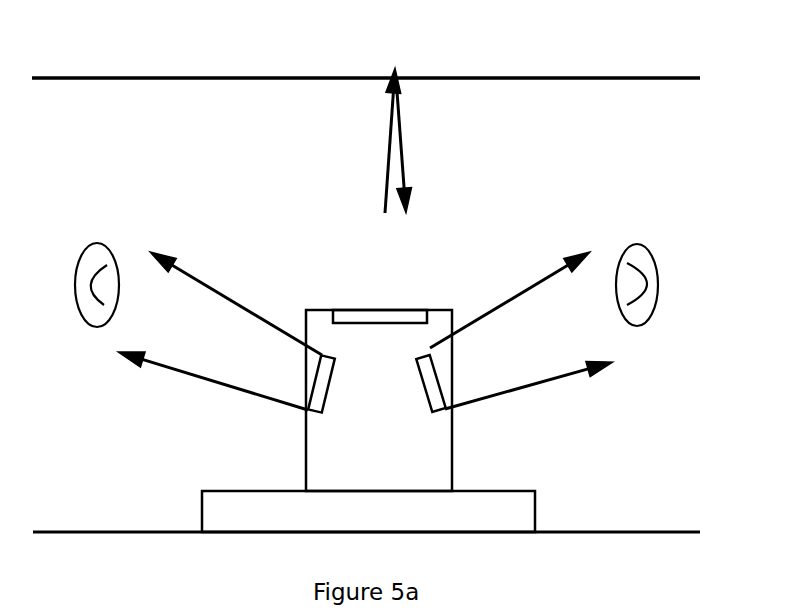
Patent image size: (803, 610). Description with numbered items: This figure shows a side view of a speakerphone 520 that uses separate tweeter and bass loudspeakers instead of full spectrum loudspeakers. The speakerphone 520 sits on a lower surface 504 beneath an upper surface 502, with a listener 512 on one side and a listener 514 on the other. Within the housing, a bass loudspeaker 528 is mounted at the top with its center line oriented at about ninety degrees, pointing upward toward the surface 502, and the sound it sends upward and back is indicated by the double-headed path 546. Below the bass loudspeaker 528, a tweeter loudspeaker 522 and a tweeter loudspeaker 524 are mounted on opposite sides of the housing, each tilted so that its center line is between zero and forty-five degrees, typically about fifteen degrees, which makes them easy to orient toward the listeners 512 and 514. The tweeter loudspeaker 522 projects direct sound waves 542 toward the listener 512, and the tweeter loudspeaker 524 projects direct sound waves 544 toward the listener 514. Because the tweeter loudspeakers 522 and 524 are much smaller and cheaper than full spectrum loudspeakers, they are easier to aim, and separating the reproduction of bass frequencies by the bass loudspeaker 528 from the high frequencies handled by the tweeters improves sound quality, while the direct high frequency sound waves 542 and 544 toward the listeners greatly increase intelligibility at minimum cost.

The ceiling / upper surface 502 is at (76, 78).
The floor / lower surface 504 is at (58, 530).
The listener 512 is at (117, 257).
The listener 514 is at (657, 273).
The speakerphone 520 is at (535, 490).
The tweeter loudspeaker 522 is at (312, 410).
The tweeter loudspeaker 524 is at (435, 413).
The bass loudspeaker 528 is at (385, 305).
The left sound beam 542 is at (210, 280).
The right sound beam 544 is at (485, 392).
The upward sound beam reflected from ceiling 546 is at (407, 178).